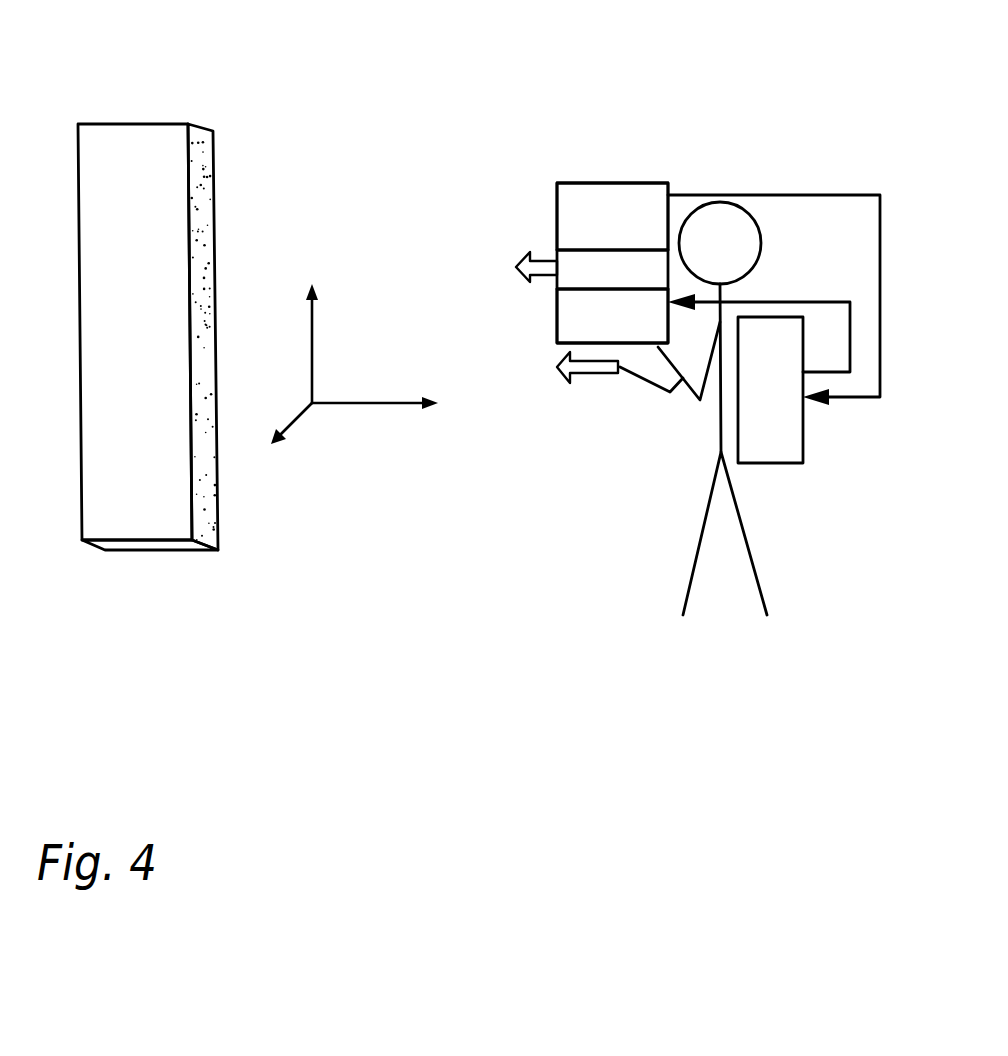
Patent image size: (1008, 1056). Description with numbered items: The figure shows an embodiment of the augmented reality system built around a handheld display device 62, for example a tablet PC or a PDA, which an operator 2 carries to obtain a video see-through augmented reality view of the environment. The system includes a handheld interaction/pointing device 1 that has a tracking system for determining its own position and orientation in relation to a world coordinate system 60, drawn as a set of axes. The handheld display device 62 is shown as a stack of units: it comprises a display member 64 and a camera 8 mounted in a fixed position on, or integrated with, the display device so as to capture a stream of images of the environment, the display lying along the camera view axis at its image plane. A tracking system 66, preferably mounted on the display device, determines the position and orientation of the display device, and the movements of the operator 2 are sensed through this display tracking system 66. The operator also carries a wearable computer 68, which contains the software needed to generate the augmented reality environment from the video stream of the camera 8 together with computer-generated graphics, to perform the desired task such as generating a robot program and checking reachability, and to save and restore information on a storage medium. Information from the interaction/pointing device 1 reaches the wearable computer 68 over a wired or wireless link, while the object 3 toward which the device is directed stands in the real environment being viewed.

The handheld interaction/pointing device 1 is at (558, 380).
The operator 2 is at (768, 268).
The target object / wall 3 is at (140, 558).
The camera 8 is at (507, 257).
The world coordinate system 60 is at (355, 428).
The handheld display device 62 is at (557, 151).
The display member 64 is at (547, 307).
The tracking system 66 is at (680, 184).
The wearable computer 68 is at (790, 468).